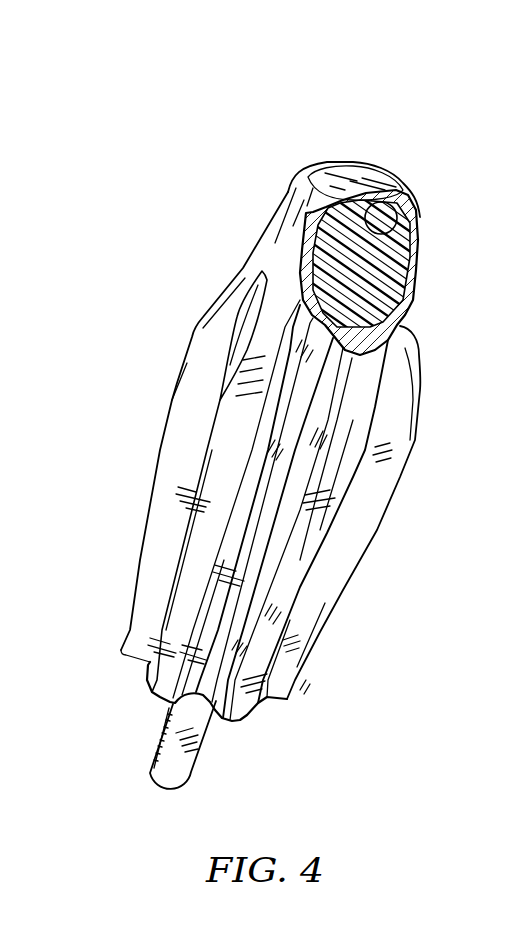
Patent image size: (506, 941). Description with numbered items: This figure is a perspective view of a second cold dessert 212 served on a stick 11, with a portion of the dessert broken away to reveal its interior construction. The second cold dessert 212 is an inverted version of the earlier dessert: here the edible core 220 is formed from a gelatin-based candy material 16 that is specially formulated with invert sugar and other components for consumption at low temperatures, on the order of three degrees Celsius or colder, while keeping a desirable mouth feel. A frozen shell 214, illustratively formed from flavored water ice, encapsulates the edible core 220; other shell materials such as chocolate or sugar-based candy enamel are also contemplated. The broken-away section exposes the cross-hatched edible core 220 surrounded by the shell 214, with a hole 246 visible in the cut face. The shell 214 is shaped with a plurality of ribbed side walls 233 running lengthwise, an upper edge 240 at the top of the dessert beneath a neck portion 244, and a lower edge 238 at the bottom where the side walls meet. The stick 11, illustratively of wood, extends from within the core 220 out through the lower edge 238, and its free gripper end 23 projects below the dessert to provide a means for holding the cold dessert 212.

The second cold dessert 212 is at (160, 122).
The neck portion 244 is at (259, 188).
The shell 214 is at (232, 261).
The top cap face 240 is at (325, 162).
The hole 246 is at (384, 224).
The gelatin-based candy material 16 is at (400, 243).
The edible core 220 is at (372, 308).
The ribs 233 is at (150, 508).
The bottom edge 238 is at (148, 665).
The gripper end 23 is at (162, 728).
The stick 11 is at (212, 764).